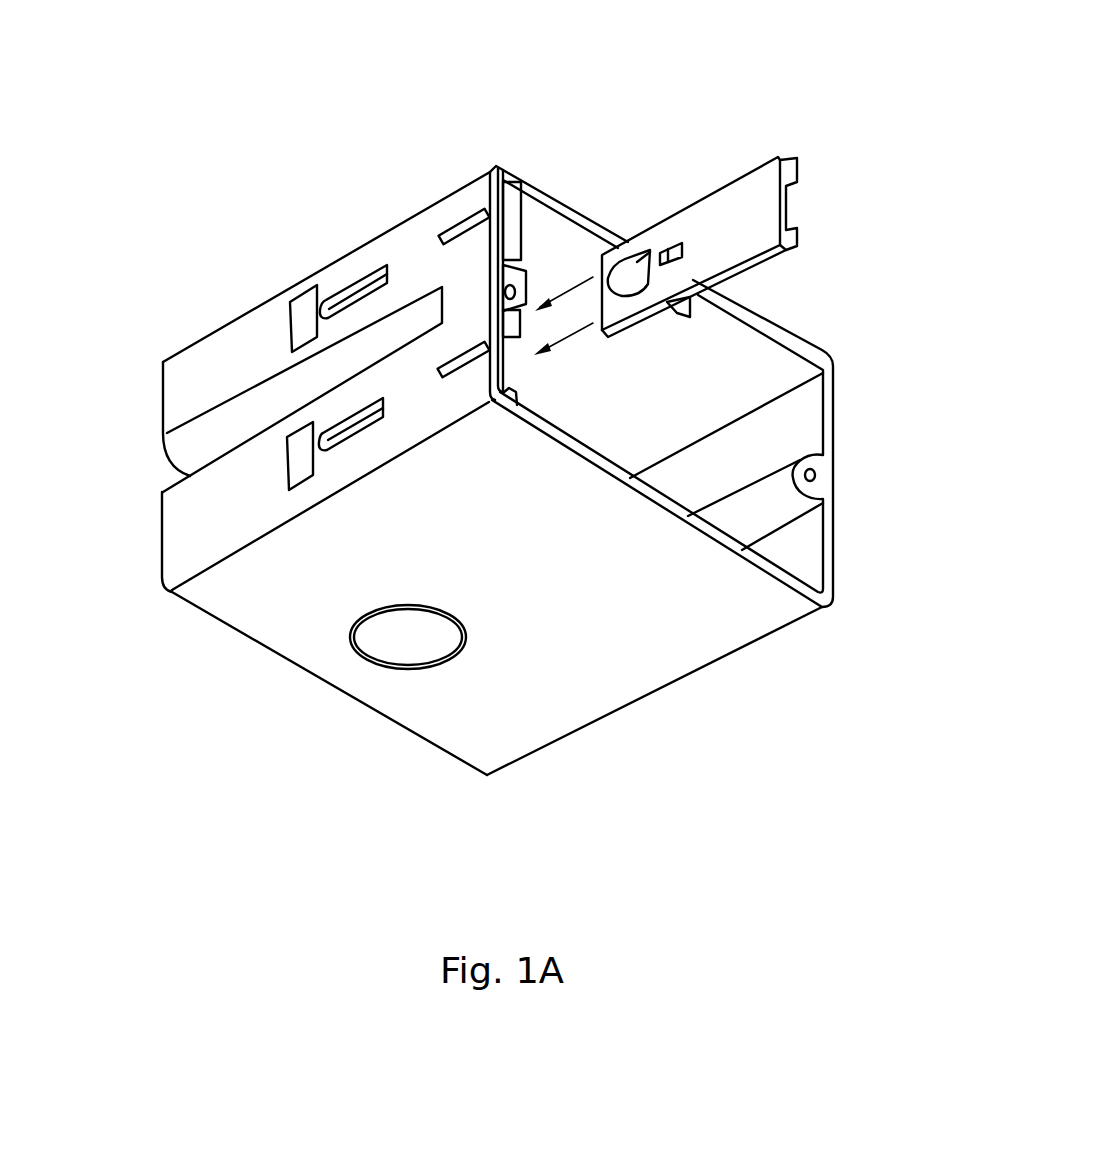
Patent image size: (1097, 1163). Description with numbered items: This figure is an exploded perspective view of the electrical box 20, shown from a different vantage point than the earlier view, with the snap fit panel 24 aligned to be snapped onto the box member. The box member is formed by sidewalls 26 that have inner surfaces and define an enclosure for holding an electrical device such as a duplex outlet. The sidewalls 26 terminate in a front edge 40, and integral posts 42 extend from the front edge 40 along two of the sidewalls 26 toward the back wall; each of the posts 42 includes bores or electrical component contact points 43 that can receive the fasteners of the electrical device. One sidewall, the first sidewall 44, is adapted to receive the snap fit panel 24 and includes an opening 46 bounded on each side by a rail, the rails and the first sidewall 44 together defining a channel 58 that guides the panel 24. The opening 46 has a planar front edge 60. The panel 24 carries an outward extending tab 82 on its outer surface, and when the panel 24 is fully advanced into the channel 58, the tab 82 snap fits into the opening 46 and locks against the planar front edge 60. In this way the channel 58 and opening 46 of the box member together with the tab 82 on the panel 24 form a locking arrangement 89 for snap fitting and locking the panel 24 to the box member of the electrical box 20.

The electrical box 20 is at (228, 230).
The snap fit panel 24 is at (721, 236).
The sidewalls 26 is at (569, 574).
The front edge 40 is at (765, 325).
The integral posts 42 is at (738, 526).
The electrical component contact points 43 is at (815, 477).
The first sidewall 44 is at (243, 357).
The opening 46 is at (355, 298).
The channel 58 is at (500, 357).
The planar front edge 60 is at (388, 266).
The outward extending tab 82 is at (660, 256).
The locking arrangement 89 is at (688, 165).